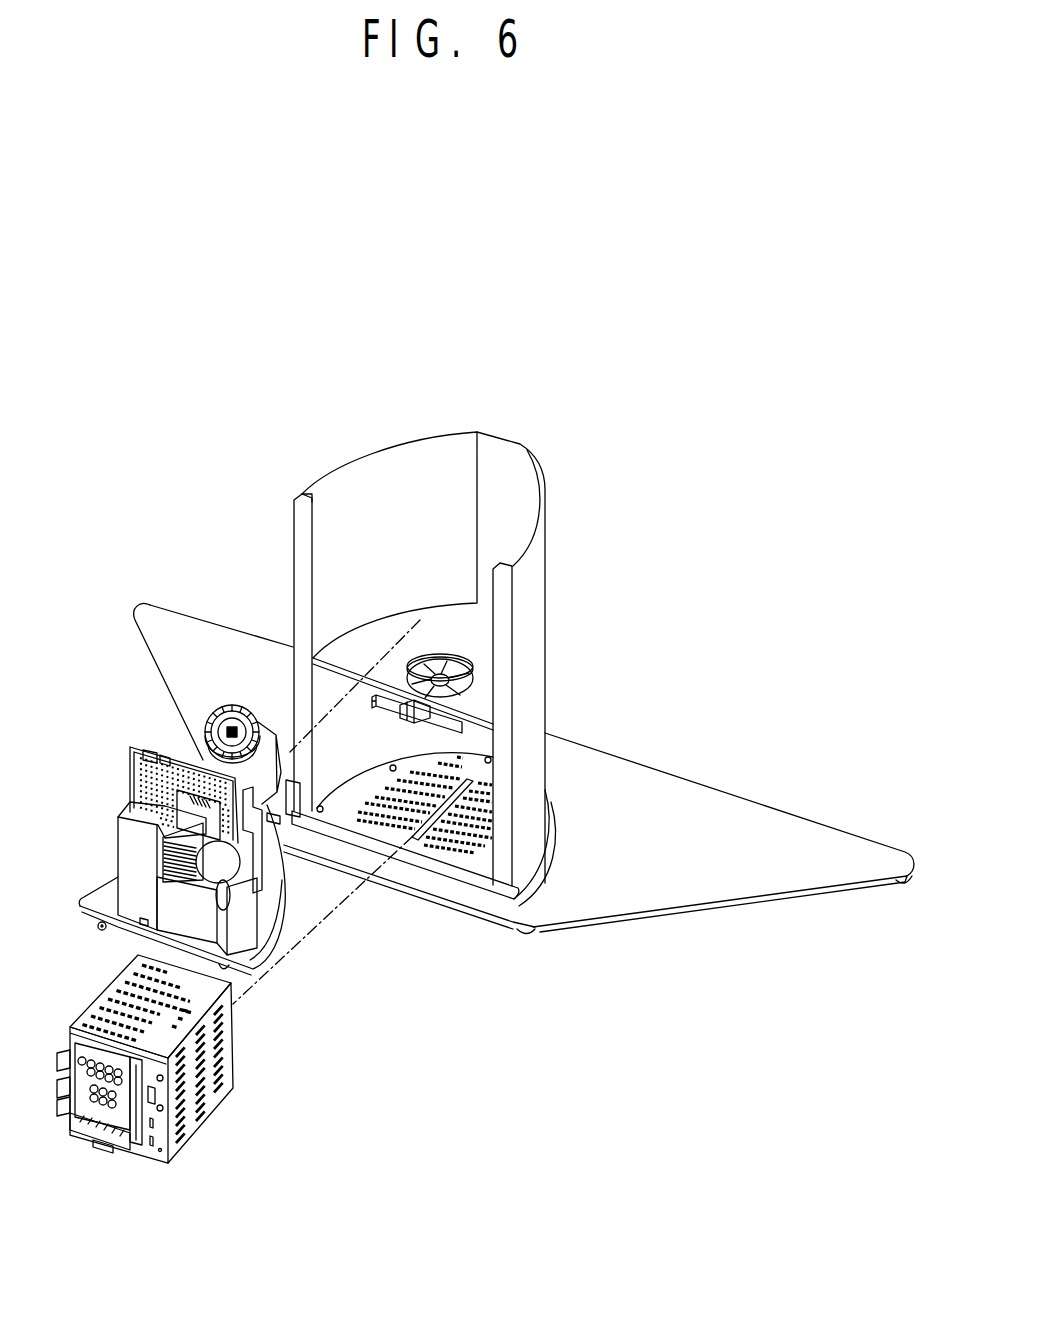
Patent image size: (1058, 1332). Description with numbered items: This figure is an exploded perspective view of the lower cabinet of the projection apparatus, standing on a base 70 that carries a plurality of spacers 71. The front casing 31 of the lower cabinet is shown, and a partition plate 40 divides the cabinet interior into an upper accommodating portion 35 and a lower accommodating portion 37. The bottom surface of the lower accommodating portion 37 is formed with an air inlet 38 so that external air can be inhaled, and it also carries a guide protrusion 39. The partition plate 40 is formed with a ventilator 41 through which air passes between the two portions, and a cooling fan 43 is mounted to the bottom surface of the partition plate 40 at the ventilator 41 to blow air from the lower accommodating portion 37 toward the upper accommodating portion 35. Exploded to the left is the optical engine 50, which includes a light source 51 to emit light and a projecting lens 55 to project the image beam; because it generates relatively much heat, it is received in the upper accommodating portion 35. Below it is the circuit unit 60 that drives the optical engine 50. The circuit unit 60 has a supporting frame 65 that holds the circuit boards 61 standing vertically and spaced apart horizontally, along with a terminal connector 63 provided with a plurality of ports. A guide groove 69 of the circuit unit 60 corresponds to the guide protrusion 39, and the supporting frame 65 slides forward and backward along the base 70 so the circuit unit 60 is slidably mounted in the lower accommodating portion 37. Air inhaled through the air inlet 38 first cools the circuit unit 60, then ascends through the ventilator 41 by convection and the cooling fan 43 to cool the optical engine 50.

The front casing 31 is at (540, 549).
The upper accommodating portion 35 is at (349, 557).
The lower accommodating portion 37 is at (318, 694).
The air inlet 38 is at (466, 850).
The guide protrusion 39 is at (413, 841).
The partition plate 40 is at (485, 703).
The ventilator 41 is at (458, 662).
The cooling fan 43 is at (468, 669).
The optical engine 50 is at (52, 742).
The light source 51 is at (152, 884).
The projecting lens 55 is at (200, 753).
The circuit unit 60 is at (205, 1212).
The circuit board 61 is at (72, 1140).
The terminal connector 63 is at (124, 1138).
The supporting frame 65 is at (190, 1135).
The guide groove 69 is at (98, 1142).
The base 70 is at (777, 898).
The spacer 71 is at (903, 884).